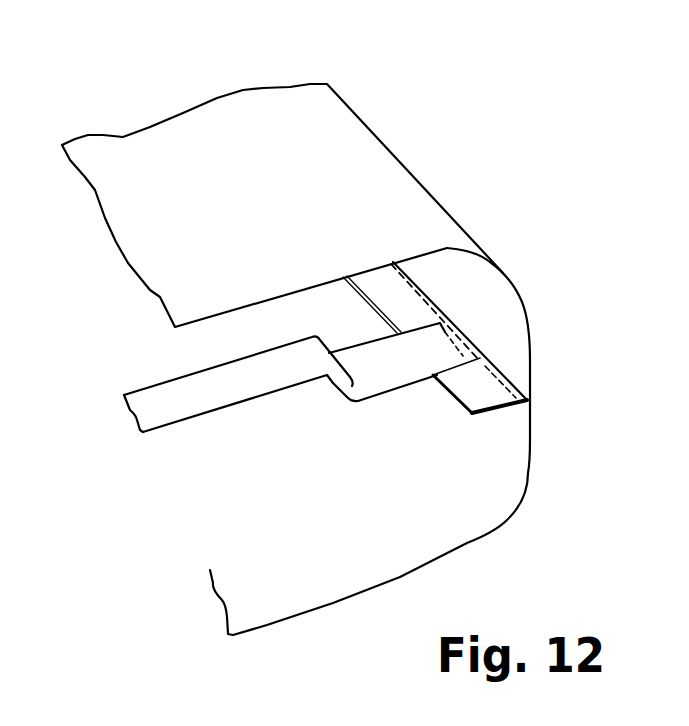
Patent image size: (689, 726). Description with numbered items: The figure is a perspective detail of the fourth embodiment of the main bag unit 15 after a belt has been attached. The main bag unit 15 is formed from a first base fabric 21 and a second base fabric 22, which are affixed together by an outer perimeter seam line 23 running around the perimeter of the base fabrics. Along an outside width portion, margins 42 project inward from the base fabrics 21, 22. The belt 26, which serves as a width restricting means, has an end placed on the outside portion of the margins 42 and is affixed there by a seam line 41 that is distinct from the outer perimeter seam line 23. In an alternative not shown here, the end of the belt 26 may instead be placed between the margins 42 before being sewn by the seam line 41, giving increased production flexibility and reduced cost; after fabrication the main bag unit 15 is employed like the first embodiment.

The main bag unit 15 is at (440, 199).
The first base fabric 21 is at (505, 264).
The second base fabric 22 is at (529, 473).
The outer perimeter seam line 23 is at (484, 366).
The belt 26 is at (172, 408).
The seam line 41 is at (445, 324).
The margin 42 is at (493, 405).